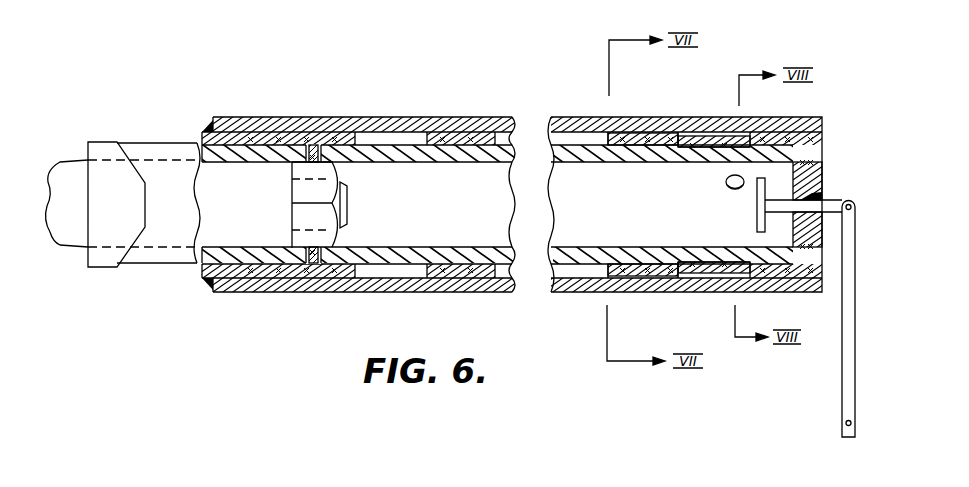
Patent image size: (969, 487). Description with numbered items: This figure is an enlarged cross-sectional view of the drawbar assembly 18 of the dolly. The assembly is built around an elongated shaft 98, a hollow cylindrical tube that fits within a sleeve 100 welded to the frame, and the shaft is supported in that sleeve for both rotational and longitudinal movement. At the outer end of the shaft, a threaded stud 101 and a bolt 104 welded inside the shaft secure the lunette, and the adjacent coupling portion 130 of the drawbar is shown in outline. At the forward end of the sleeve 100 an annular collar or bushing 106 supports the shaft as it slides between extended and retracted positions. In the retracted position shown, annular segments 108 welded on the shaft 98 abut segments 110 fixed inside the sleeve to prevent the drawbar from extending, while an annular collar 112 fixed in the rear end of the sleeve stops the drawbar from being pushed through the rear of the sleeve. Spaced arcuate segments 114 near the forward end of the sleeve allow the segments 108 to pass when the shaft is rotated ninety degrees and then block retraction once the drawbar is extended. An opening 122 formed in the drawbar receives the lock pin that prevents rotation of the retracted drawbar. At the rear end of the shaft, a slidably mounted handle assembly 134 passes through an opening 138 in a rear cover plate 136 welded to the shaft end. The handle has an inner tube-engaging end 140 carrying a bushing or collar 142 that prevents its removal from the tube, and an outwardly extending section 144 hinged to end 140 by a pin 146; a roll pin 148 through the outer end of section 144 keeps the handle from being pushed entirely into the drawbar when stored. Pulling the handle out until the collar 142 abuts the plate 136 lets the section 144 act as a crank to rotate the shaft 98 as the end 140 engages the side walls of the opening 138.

The tool assembly 18 is at (128, 124).
The elongated shaft 98 is at (177, 255).
The sleeve 100 is at (285, 117).
The threaded stud 101 is at (349, 201).
The bolt 104 is at (325, 241).
The annular collar or bushing 106 is at (203, 144).
The annular segments 108 is at (714, 138).
The segments 110 is at (633, 135).
The annular collar 112 is at (817, 140).
The spaced arcuate segments 114 is at (453, 140).
The opening 122 is at (725, 182).
The coupling block 130 is at (125, 205).
The handle assembly 134 is at (852, 238).
The rear cover plate 136 is at (815, 182).
The opening 138 is at (822, 195).
The tube-engaging end 140 is at (775, 213).
The bushing or collar 142 is at (757, 205).
The outwardly extending section 144 is at (848, 345).
The pin 146 is at (851, 208).
The roll pin 148 is at (846, 423).